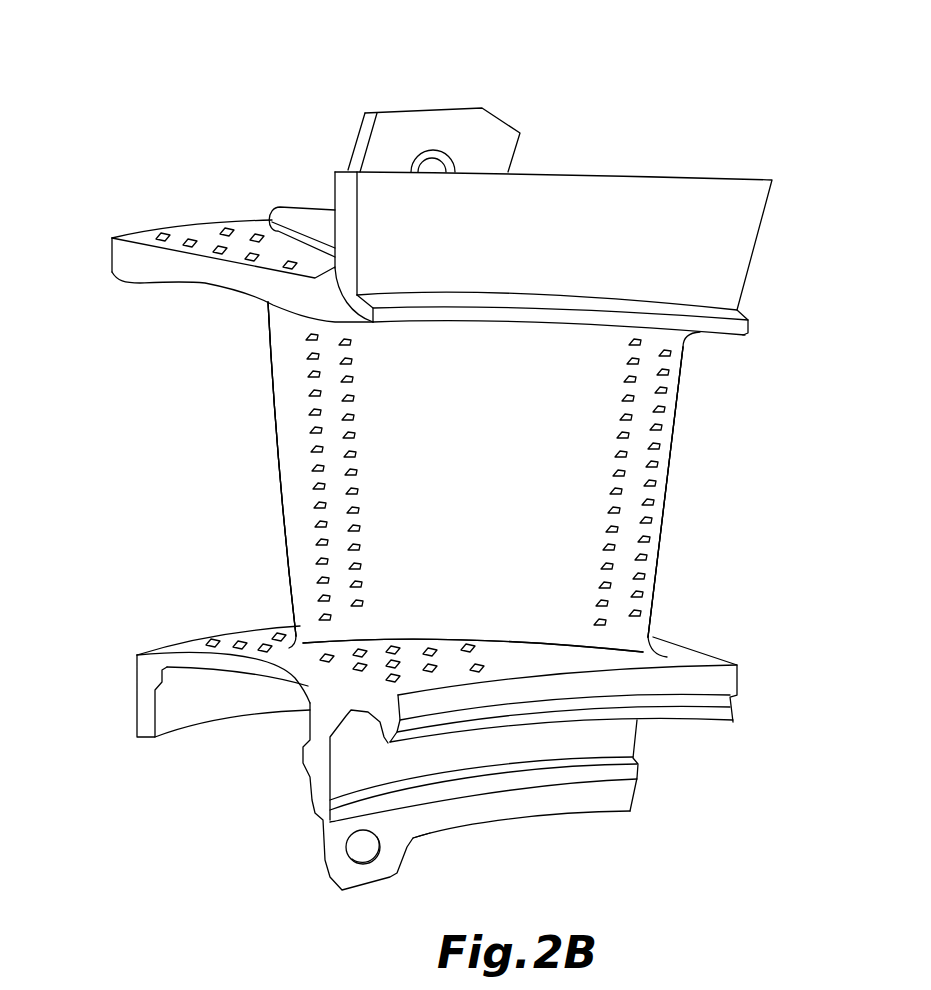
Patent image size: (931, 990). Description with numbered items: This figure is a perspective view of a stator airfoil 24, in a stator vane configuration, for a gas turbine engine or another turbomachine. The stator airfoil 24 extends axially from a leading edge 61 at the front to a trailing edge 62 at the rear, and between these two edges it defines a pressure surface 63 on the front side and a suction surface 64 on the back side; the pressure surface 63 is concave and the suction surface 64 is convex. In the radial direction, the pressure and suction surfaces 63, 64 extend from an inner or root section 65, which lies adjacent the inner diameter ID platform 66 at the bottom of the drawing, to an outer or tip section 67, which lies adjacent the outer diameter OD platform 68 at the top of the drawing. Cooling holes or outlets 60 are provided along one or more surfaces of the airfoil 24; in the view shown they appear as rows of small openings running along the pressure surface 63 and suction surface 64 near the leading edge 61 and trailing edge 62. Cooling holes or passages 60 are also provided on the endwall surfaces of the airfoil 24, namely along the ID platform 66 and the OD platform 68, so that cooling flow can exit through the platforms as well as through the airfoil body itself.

The stator airfoil 24 is at (138, 90).
The cooling holes 60 is at (227, 230).
The leading edge 61 is at (277, 365).
The trailing edge 62 is at (662, 535).
The pressure surface 63 is at (395, 486).
The suction surface 64 is at (675, 473).
The inner section 65 is at (310, 623).
The ID platform 66 is at (727, 682).
The outer section 67 is at (288, 327).
The OD platform 68 is at (127, 267).